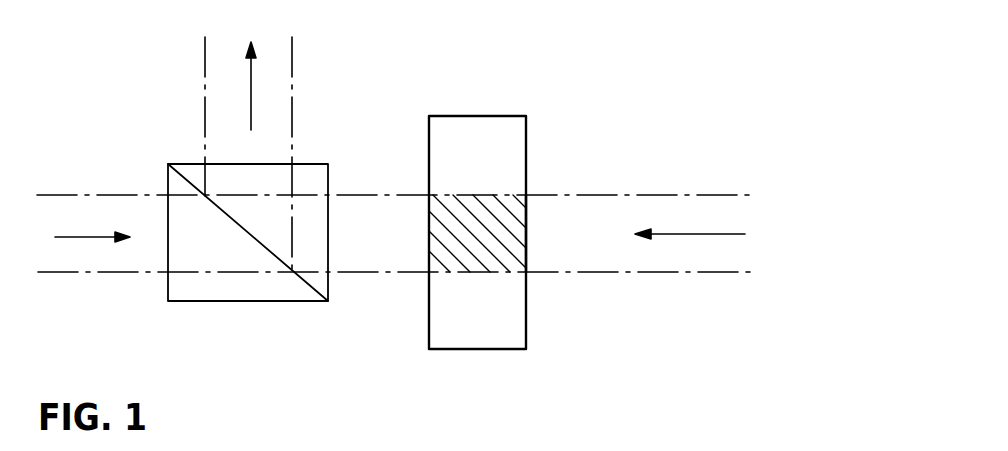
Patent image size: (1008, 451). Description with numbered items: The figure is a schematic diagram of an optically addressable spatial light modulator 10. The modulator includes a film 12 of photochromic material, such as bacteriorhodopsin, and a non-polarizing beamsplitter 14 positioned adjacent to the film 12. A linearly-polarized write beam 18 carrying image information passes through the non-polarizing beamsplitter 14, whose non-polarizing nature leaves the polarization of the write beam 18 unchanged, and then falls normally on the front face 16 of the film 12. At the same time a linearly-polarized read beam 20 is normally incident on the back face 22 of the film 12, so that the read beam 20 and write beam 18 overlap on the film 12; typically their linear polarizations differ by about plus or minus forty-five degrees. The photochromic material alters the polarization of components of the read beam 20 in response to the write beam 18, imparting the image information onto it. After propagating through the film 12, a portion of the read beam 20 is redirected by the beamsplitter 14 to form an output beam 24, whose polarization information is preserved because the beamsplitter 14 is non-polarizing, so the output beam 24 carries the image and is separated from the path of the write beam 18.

The spatial light modulator 10 is at (393, 205).
The film 12 is at (473, 335).
The non-polarizing beamsplitter 14 is at (225, 288).
The front face 16 is at (429, 245).
The write beam 18 is at (80, 260).
The read beam 20 is at (680, 198).
The back face 22 is at (526, 245).
The output beam 24 is at (278, 80).